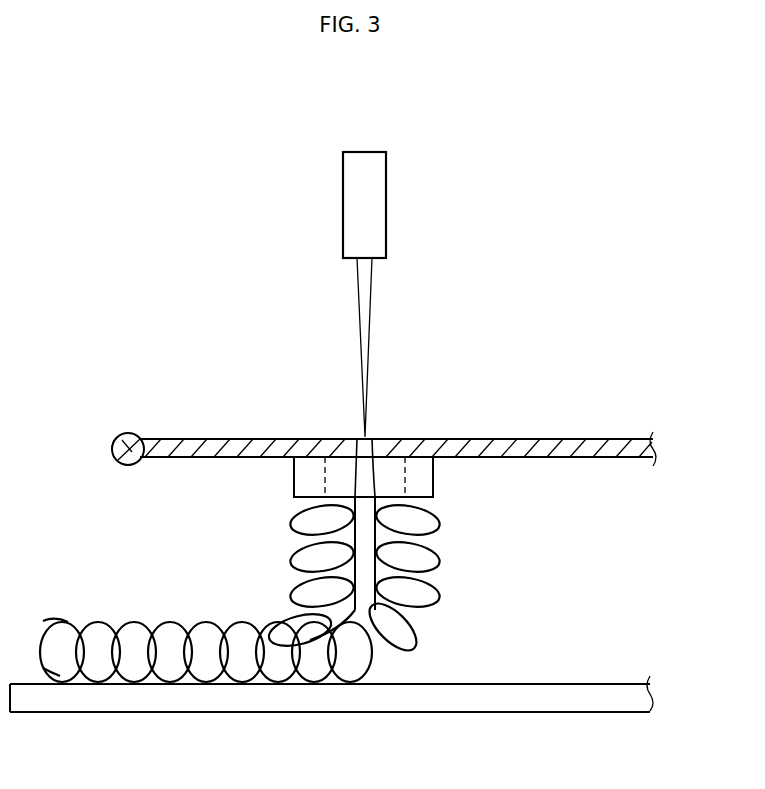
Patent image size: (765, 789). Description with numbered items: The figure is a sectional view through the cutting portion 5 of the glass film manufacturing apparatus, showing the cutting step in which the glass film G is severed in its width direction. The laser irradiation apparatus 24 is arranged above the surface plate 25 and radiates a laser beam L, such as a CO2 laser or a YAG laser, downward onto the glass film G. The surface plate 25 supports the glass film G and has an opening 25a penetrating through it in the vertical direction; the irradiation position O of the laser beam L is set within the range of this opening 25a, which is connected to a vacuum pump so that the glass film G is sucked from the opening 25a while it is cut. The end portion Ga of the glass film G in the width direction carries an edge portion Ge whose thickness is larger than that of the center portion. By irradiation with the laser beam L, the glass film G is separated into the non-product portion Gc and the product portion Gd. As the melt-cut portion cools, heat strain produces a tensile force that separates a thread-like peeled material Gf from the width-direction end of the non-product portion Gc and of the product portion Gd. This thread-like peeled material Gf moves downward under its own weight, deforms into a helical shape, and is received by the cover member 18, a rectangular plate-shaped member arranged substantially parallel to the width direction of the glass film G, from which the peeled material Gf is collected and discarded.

The cutting portion 5 is at (562, 145).
The laser irradiation apparatus 24 is at (386, 198).
The laser beam L is at (370, 310).
The glass film G is at (562, 418).
The end portion of the glass film Ga is at (99, 436).
The non-product portion Gc is at (254, 438).
The product portion Gd is at (482, 438).
The edge portion Ge is at (130, 433).
The thread-like peeled material Gf is at (294, 554).
The irradiation position O is at (362, 438).
The surface plate 25 is at (271, 490).
The opening 25a is at (404, 474).
The cover member 18 is at (457, 703).